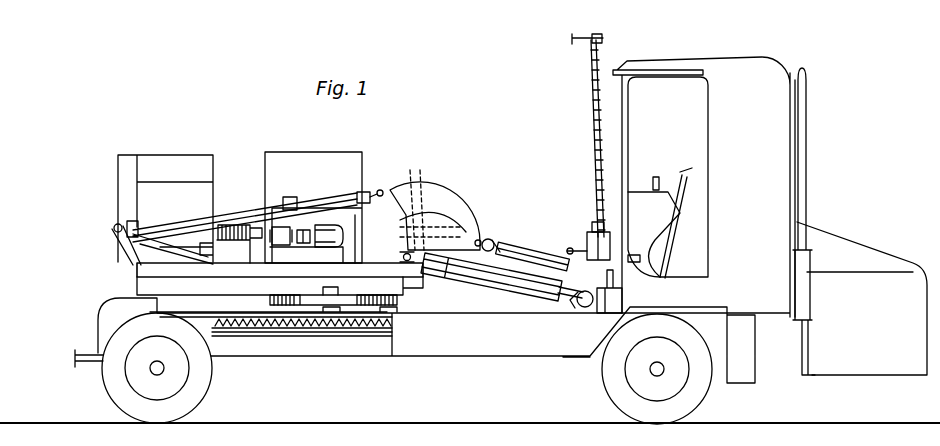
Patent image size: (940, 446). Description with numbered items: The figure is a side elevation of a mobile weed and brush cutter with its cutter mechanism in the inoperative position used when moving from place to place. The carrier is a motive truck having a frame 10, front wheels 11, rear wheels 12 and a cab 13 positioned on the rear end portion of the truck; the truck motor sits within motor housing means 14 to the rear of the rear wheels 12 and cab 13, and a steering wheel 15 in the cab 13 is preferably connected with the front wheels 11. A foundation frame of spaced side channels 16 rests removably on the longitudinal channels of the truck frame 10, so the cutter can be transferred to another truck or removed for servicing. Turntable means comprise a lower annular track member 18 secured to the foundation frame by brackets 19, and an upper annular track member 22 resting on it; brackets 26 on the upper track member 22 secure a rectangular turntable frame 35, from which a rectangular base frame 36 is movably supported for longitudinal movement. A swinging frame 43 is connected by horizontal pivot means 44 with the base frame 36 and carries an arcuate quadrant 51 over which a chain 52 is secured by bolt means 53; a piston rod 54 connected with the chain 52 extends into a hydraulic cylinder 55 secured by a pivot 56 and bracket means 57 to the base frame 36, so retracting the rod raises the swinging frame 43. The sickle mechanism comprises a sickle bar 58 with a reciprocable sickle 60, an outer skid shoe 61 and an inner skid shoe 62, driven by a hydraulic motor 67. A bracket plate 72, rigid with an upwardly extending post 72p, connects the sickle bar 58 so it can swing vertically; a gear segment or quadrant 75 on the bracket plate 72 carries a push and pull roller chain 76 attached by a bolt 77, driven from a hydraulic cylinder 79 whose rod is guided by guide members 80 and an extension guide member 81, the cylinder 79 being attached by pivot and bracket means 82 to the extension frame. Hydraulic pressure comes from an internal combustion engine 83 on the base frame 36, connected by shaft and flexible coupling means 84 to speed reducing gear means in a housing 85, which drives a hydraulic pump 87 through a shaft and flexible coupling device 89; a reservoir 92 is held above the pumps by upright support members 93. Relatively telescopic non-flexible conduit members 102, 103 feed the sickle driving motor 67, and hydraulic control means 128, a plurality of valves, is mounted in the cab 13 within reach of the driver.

The frame 10 is at (373, 348).
The front wheels 11 is at (112, 383).
The rear wheels 12 is at (702, 392).
The cab 13 is at (781, 137).
The motor housing means 14 is at (887, 282).
The steering wheel 15 is at (682, 175).
The side channels 16 is at (388, 325).
The lower annular track member 18 is at (395, 303).
The brackets 19 is at (390, 310).
The upper annular track member 22 is at (403, 297).
The brackets 26 is at (327, 288).
The turntable frame 35 is at (405, 285).
The base frame 36 is at (147, 270).
The swinging frame 43 is at (457, 222).
The pivot means 44 is at (402, 249).
The arcuate quadrant 51 is at (473, 230).
The chain 52 is at (382, 190).
The bolt means 53 is at (488, 240).
The piston rod 54 is at (343, 198).
The hydraulic cylinder 55 is at (180, 218).
The pivot 56 is at (116, 225).
The bracket means 57 is at (125, 242).
The sickle bar 58 is at (597, 58).
The sickle 60 is at (323, 320).
The outer skid shoe 61 is at (603, 38).
The inner skid shoe 62 is at (603, 248).
The hydraulic motor 67 is at (591, 308).
The bracket plate 72 is at (594, 222).
The post 72p is at (568, 248).
The gear segment or quadrant 75 is at (576, 309).
The push and pull roller chain 76 is at (612, 279).
The bolt 77 is at (587, 268).
The hydraulic cylinder 79 is at (497, 245).
The guide members 80 is at (527, 255).
The extension guide member 81 is at (578, 250).
The pivot and bracket means 82 is at (422, 195).
The internal combustion engine 83 is at (152, 172).
The shaft and flexible coupling means 84 is at (257, 230).
The housing 85 is at (282, 226).
The hydraulic pump 87 is at (328, 225).
The shaft and flexible coupling device 89 is at (308, 230).
The reservoir 92 is at (327, 163).
The upright support members 93 is at (360, 240).
The telescopic conduit member 102 is at (490, 273).
The telescopic conduit member 103 is at (513, 293).
The hydraulic control means 128 is at (660, 167).